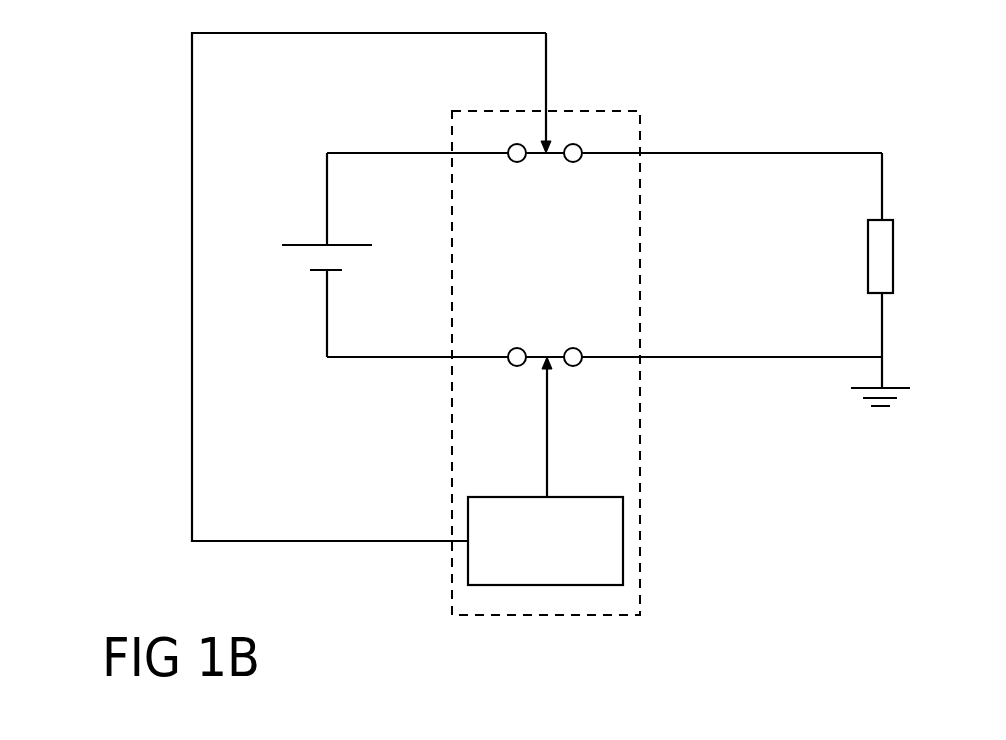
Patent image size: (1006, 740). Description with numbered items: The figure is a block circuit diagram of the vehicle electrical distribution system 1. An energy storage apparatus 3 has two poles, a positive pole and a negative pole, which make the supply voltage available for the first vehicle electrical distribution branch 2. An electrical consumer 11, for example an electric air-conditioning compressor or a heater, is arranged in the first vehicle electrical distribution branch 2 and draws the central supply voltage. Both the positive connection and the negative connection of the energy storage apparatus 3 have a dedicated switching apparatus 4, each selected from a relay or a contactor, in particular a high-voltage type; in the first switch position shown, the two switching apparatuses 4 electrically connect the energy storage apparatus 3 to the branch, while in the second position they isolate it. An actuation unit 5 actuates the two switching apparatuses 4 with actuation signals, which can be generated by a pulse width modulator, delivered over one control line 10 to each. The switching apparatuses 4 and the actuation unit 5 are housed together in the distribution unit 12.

The vehicle electrical distribution system 1 is at (918, 86).
The first vehicle electrical distribution branch 2 is at (758, 400).
The energy storage apparatus 3 is at (278, 212).
The switching apparatus 4 is at (548, 172).
The actuation unit 5 is at (507, 523).
The control line 10 is at (302, 542).
The electrical consumer 11 is at (880, 252).
The distribution unit 12 is at (465, 414).